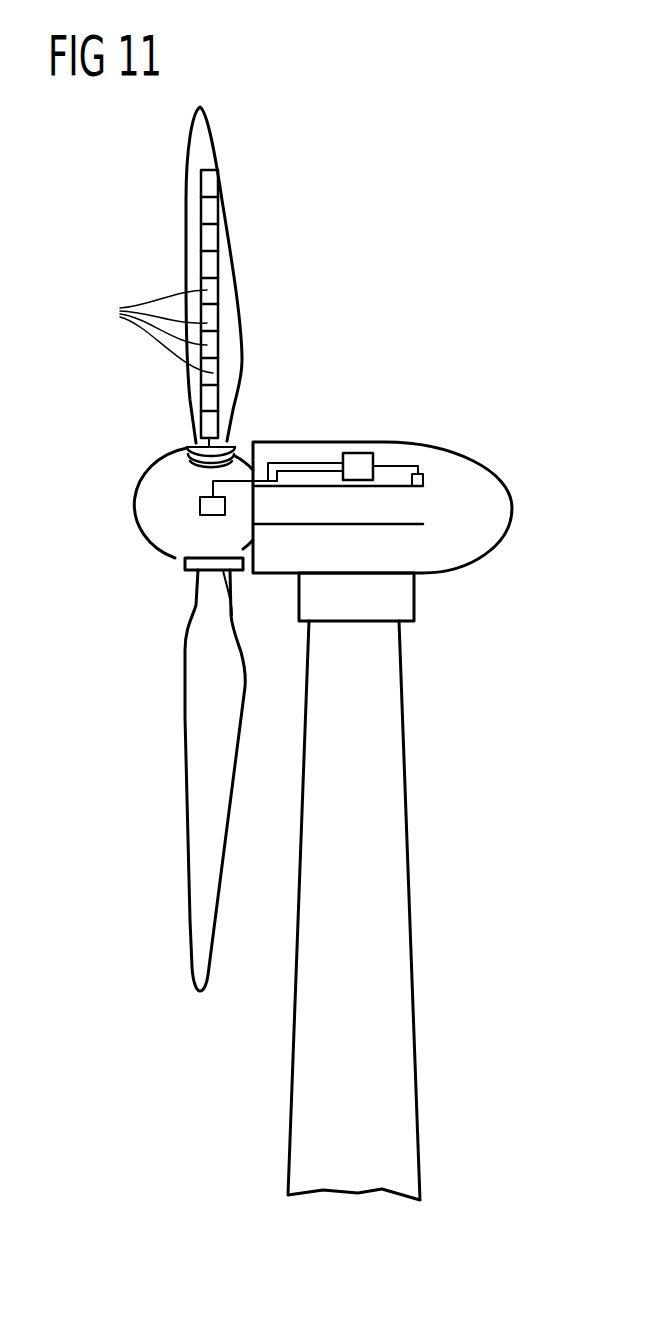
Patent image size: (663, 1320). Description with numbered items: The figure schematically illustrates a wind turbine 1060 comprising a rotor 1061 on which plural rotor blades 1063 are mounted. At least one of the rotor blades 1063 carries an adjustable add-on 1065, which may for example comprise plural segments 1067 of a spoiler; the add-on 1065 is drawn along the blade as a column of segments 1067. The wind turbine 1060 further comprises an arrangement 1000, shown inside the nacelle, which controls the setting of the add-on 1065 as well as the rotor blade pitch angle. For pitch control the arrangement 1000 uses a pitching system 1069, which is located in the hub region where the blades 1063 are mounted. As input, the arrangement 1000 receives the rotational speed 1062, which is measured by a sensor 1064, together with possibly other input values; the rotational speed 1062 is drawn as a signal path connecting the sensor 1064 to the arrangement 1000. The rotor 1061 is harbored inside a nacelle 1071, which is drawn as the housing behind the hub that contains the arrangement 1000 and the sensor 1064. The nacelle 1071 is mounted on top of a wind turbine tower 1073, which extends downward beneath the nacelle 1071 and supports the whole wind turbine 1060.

The wind turbine 1060 is at (439, 232).
The rotor 1061 is at (352, 524).
The rotational speed 1062 is at (378, 462).
The rotor blades 1063 is at (240, 291).
The sensor 1064 is at (425, 479).
The adjustable add-on 1065 is at (233, 256).
The segments 1067 is at (134, 331).
The pitching system 1069 is at (200, 507).
The nacelle 1071 is at (289, 441).
The wind turbine tower 1073 is at (411, 925).
The arrangement 1000 is at (358, 455).